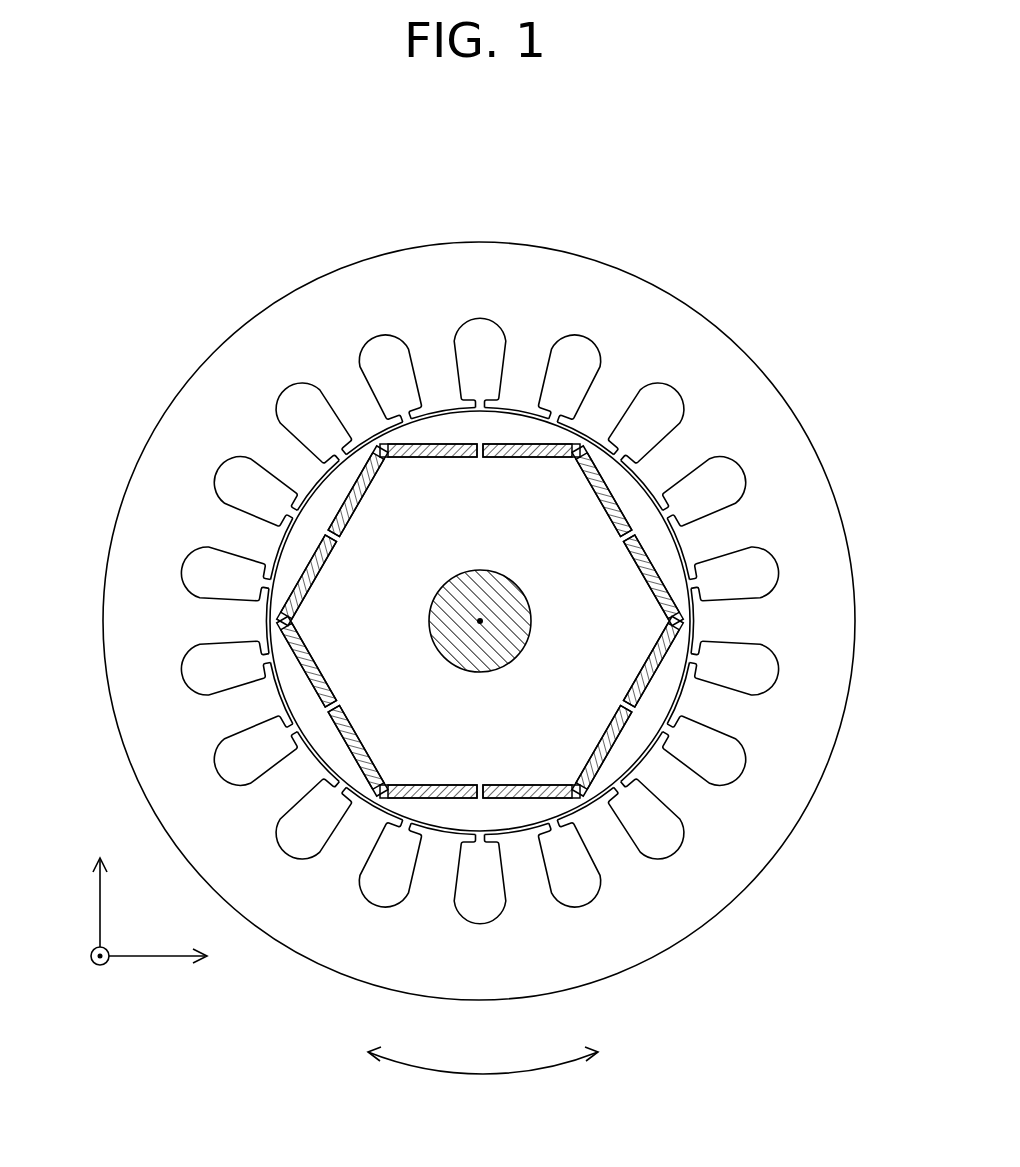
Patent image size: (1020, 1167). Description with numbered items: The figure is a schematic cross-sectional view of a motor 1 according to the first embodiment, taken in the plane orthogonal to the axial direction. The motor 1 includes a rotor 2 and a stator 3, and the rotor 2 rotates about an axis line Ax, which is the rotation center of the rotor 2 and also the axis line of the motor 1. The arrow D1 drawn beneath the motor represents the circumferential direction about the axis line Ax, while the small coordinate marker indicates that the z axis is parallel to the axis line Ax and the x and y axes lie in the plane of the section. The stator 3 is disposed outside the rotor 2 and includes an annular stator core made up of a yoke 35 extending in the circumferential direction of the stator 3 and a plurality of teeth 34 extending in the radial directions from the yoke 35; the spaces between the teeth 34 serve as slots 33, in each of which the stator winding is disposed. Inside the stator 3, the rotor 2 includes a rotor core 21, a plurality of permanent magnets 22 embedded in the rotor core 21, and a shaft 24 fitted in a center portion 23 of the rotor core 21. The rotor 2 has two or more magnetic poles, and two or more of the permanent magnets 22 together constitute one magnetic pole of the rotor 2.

The motor 1 is at (176, 302).
The rotor 2 is at (480, 408).
The stator 3 is at (480, 242).
The rotor core 21 is at (628, 495).
The permanent magnet 22 is at (440, 457).
The center portion 23 is at (478, 571).
The shaft 24 is at (512, 640).
The slot 33 is at (384, 357).
The tooth 34 is at (438, 364).
The yoke 35 is at (745, 393).
The axis line Ax is at (480, 623).
The circumferential direction arrow D1 is at (482, 1076).